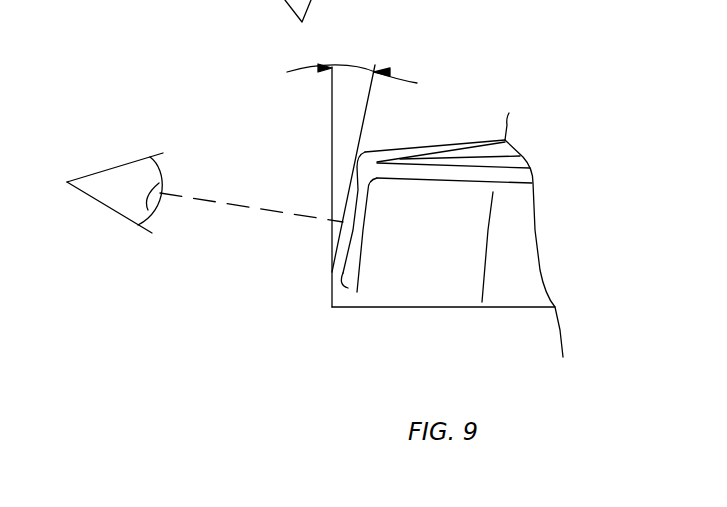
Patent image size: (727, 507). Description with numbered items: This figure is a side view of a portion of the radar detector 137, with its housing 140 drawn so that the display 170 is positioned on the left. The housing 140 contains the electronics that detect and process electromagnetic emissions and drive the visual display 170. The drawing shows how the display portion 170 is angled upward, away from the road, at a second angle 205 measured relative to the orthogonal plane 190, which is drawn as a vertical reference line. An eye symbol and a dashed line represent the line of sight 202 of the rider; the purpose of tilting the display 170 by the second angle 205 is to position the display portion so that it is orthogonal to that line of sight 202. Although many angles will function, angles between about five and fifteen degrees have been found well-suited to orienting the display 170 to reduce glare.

The radar detector 137 is at (425, 219).
The housing 140 is at (333, 268).
The visual display 170 is at (345, 242).
The orthogonal plane 190 is at (332, 135).
The line of sight 202 is at (193, 200).
The second angle 205 is at (352, 65).